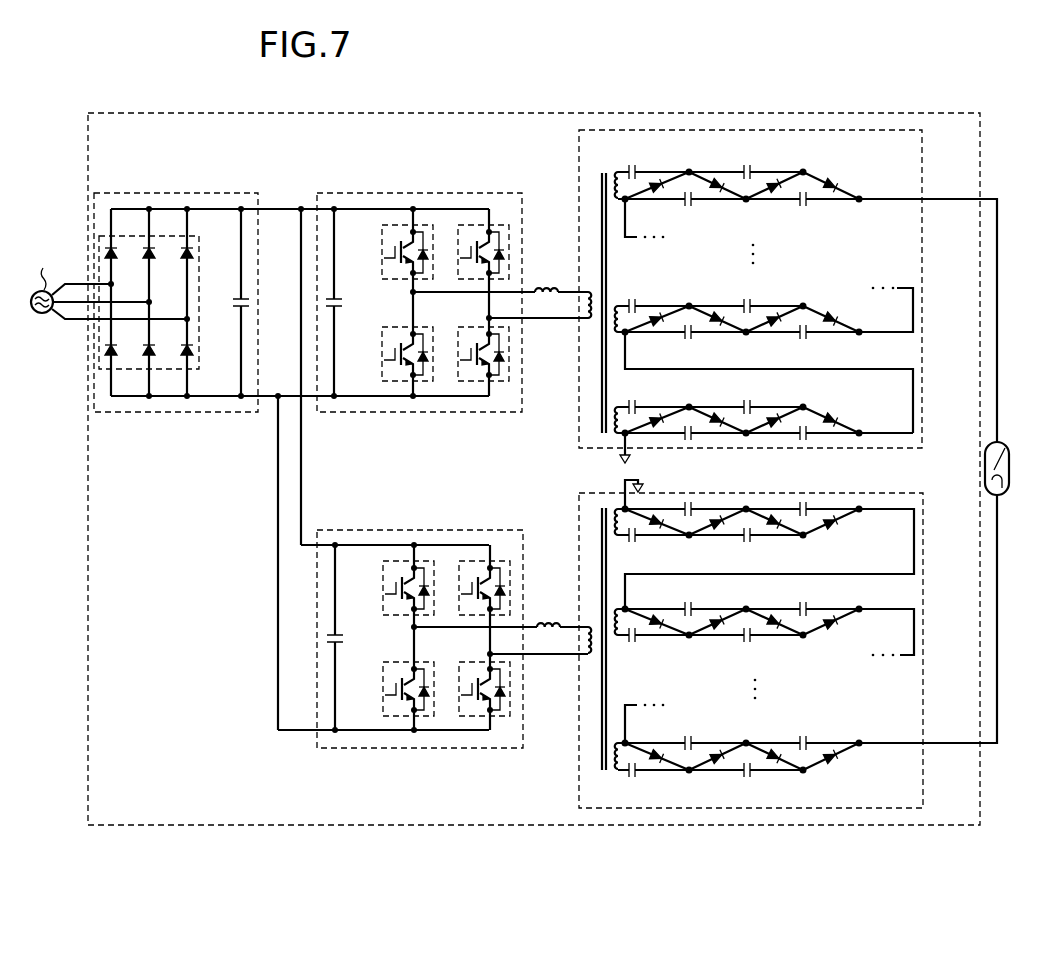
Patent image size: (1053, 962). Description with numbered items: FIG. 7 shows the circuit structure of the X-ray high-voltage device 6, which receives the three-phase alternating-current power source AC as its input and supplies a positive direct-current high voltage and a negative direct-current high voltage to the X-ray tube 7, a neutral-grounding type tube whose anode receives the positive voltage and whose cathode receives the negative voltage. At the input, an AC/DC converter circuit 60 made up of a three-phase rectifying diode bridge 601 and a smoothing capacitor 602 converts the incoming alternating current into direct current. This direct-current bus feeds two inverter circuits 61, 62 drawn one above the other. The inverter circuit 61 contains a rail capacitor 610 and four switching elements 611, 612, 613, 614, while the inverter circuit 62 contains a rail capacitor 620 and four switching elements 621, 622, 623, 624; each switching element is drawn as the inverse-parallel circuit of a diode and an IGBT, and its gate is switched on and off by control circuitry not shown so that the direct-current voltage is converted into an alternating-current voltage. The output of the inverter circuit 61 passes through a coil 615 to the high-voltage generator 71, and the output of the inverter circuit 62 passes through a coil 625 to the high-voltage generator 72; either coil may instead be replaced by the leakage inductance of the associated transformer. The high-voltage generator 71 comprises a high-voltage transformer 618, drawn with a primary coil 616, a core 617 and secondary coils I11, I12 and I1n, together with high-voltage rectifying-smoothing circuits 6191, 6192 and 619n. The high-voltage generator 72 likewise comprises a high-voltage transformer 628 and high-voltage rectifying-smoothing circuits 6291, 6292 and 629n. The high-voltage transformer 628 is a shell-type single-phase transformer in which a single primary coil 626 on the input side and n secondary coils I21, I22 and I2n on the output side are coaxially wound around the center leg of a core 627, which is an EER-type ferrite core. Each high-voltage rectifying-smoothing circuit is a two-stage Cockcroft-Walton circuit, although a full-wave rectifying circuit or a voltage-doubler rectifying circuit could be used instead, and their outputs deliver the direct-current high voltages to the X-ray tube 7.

The X-ray high-voltage device 6 is at (983, 130).
The AC/DC converter circuit 60 is at (128, 193).
The three-phase rectifying diode bridge 601 is at (199, 253).
The smoothing capacitor 602 is at (241, 312).
The inverter circuit 61 is at (373, 193).
The rail capacitor 610 is at (333, 296).
The switching element 611 is at (421, 230).
The switching element 612 is at (420, 380).
The switching element 613 is at (498, 230).
The switching element 614 is at (497, 380).
The coil 615 is at (552, 286).
The primary winding 616 is at (590, 290).
The core 617 is at (600, 185).
The high-voltage transformer 618 is at (503, 56).
The secondary winding I11 is at (617, 173).
The secondary winding I12 is at (617, 307).
The secondary winding I1n is at (618, 408).
The high-voltage generator 71 is at (925, 140).
The high-voltage rectifying-smoothing circuit 6191 is at (875, 410).
The high-voltage rectifying-smoothing circuit 6192 is at (875, 319).
The high-voltage rectifying-smoothing circuit 619n is at (875, 185).
The inverter circuit 62 is at (373, 530).
The rail capacitor 620 is at (334, 632).
The switching element 621 is at (421, 566).
The switching element 622 is at (420, 716).
The switching element 623 is at (498, 566).
The switching element 624 is at (497, 716).
The coil 625 is at (552, 622).
The primary coil 626 is at (590, 656).
The core 627 is at (600, 770).
The high-voltage transformer 628 is at (503, 898).
The secondary coil I21 is at (617, 770).
The secondary coil I22 is at (617, 635).
The secondary coil I2n is at (618, 535).
The high-voltage generator 72 is at (925, 500).
The high-voltage rectifying-smoothing circuit 6291 is at (875, 537).
The high-voltage rectifying-smoothing circuit 6292 is at (875, 635).
The high-voltage rectifying-smoothing circuit 629n is at (875, 772).
The X-ray tube 7 is at (1011, 466).